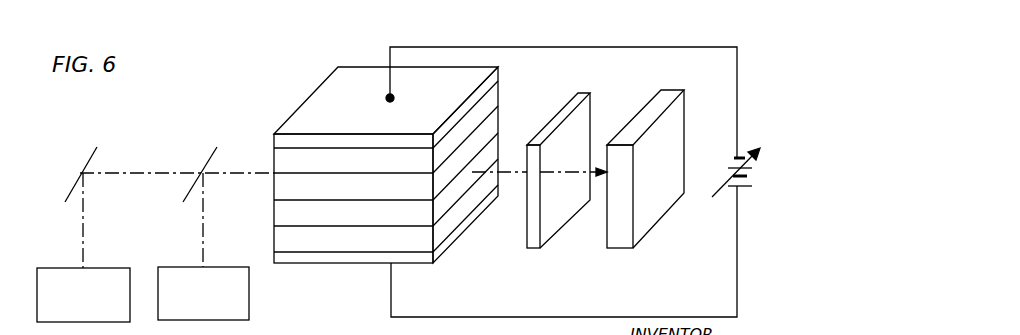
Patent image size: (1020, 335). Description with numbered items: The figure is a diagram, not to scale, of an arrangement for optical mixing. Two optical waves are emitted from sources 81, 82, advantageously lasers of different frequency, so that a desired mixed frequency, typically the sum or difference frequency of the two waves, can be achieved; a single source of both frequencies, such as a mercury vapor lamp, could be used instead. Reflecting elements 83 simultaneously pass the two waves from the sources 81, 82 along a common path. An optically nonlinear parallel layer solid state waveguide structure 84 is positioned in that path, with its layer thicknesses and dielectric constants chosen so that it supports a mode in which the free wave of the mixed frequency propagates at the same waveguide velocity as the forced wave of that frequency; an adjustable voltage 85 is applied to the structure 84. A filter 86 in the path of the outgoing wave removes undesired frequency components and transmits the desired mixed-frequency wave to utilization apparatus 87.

The source 81 is at (92, 267).
The source 82 is at (212, 266).
The reflecting elements 83 is at (203, 163).
The solid state waveguide structure 84 is at (341, 243).
The adjustable voltage 85 is at (733, 171).
The filter 86 is at (588, 112).
The utilization apparatus 87 is at (654, 210).